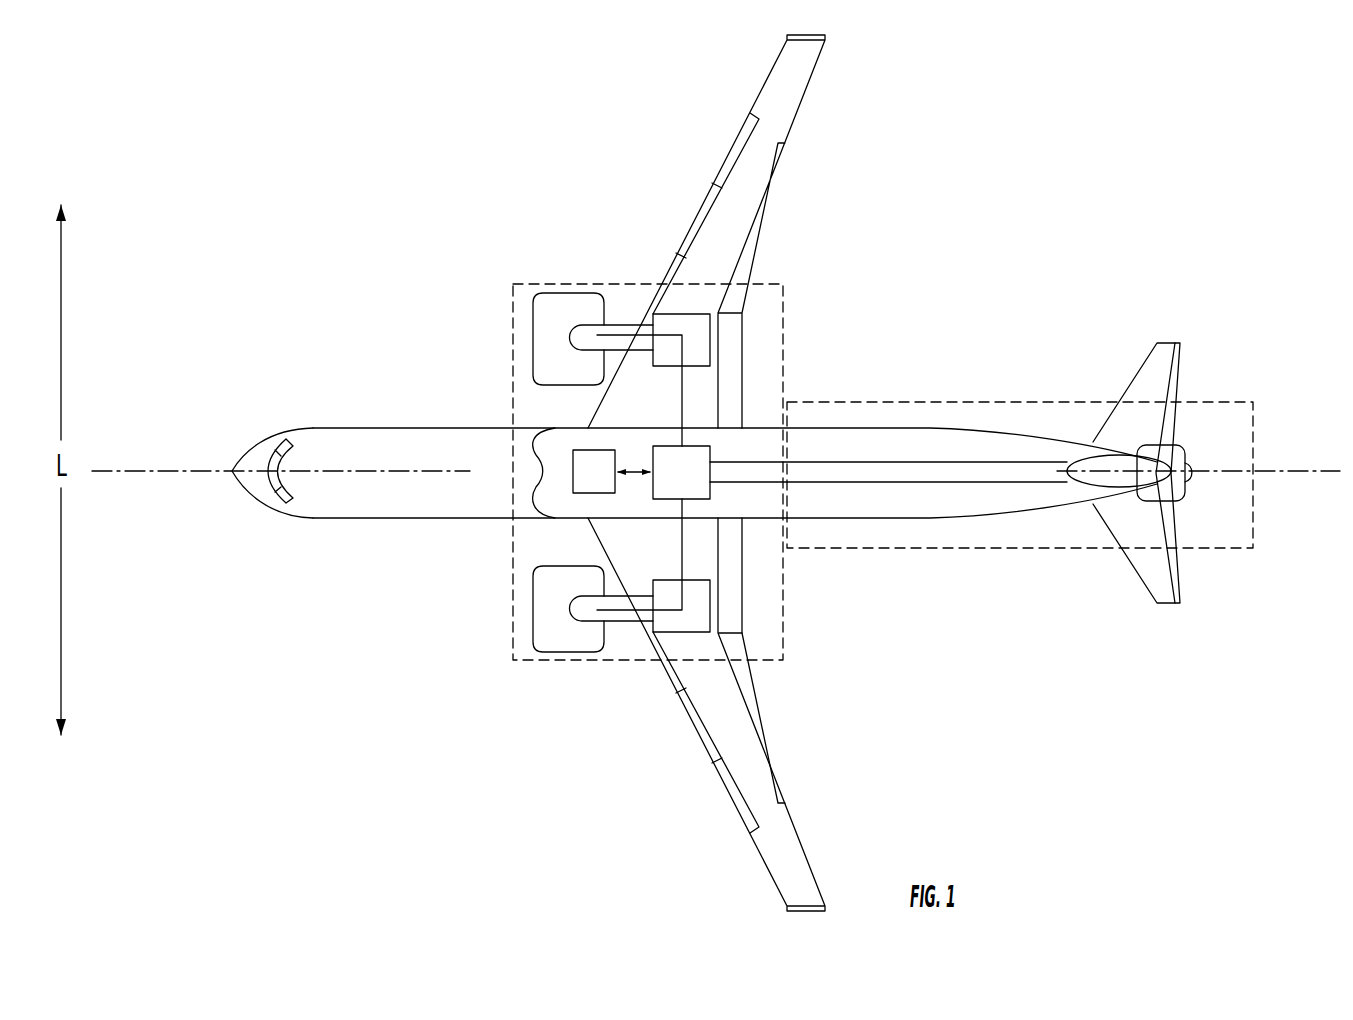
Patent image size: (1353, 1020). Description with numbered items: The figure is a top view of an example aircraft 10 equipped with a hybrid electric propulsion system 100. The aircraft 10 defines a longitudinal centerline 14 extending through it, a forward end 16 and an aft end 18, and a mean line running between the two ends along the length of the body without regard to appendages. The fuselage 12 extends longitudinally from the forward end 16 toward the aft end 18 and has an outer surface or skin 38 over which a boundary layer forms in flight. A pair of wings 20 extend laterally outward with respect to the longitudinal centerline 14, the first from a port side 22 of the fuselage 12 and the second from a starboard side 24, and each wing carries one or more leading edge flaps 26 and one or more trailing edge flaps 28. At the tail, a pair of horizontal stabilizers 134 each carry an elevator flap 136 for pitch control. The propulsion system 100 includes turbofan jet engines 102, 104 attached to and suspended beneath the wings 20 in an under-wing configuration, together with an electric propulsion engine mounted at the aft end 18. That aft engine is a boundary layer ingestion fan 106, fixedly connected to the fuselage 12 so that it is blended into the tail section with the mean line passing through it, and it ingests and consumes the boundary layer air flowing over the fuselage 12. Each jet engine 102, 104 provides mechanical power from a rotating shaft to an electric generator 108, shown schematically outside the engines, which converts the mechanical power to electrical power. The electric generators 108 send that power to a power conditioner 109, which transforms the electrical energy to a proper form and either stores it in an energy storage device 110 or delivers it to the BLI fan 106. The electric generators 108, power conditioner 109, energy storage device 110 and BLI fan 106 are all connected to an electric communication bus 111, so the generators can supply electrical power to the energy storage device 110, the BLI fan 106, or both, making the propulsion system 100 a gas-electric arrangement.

The aircraft 10 is at (718, 473).
The fuselage 12 is at (652, 484).
The longitudinal centerline 14 is at (1283, 470).
The forward end 16 is at (248, 482).
The aft end 18 is at (1160, 483).
The wings 20 is at (741, 473).
The port side 22 is at (430, 552).
The starboard side 24 is at (313, 420).
The leading edge flaps 26 is at (700, 730).
The trailing edge flaps 28 is at (775, 743).
The outer surface or skin 38 is at (909, 487).
The propulsion system 100 is at (1062, 449).
The turbofan jet engine 102 is at (548, 637).
The turbofan jet engine 104 is at (550, 310).
The boundary layer ingestion (BLI) fan 106 is at (1188, 437).
The electric generator 108 is at (710, 338).
The power conditioner 109 is at (708, 450).
The energy storage device 110 is at (573, 470).
The electric communication bus 111 is at (775, 504).
The horizontal stabilizers 134 is at (1140, 373).
The elevator flap 136 is at (1170, 388).